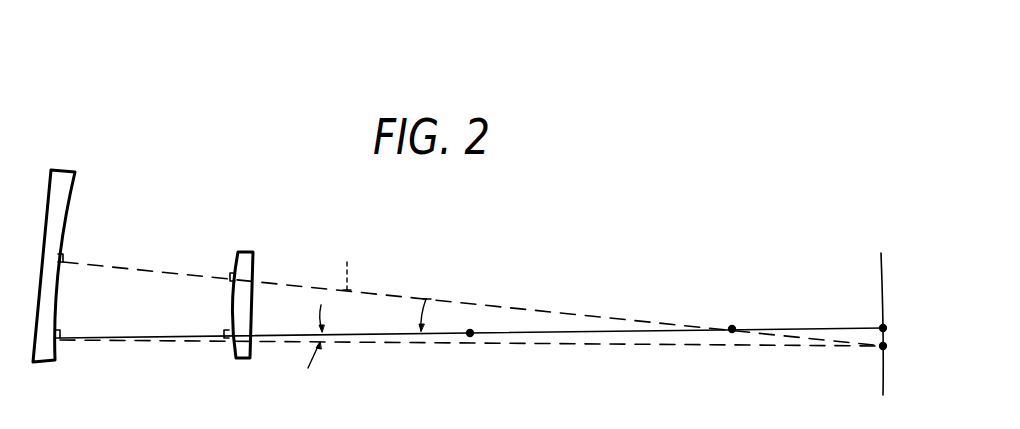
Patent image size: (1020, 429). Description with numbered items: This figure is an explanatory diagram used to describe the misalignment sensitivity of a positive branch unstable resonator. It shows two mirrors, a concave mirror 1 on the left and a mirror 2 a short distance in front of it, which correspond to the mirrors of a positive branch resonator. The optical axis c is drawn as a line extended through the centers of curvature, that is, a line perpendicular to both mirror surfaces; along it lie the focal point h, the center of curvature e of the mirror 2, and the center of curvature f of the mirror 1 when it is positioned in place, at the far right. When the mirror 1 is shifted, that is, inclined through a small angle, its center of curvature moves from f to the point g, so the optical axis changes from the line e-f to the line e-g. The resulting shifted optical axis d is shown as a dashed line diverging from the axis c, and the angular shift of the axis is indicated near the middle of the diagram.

The mirror 1 is at (66, 170).
The mirror 2 is at (246, 252).
The optical axis c is at (543, 333).
The shifted optical axis d is at (343, 262).
The center of curvature of mirror 2 e is at (728, 314).
The center of curvature of mirror 1 positioned in place f is at (890, 323).
The center of curvature of mirror 1 shifted g is at (481, 311).
The focal point h is at (470, 338).